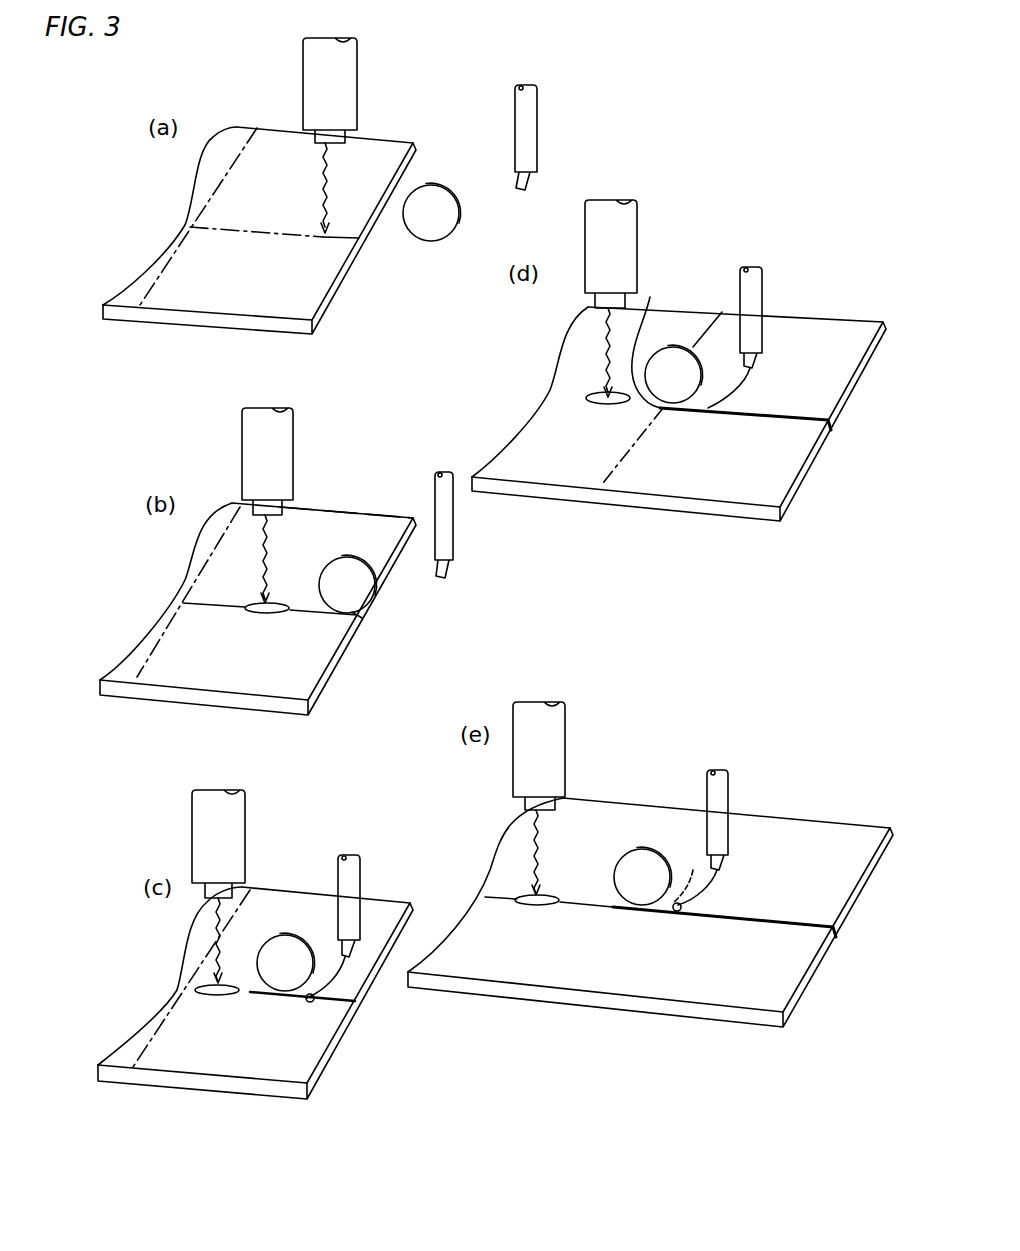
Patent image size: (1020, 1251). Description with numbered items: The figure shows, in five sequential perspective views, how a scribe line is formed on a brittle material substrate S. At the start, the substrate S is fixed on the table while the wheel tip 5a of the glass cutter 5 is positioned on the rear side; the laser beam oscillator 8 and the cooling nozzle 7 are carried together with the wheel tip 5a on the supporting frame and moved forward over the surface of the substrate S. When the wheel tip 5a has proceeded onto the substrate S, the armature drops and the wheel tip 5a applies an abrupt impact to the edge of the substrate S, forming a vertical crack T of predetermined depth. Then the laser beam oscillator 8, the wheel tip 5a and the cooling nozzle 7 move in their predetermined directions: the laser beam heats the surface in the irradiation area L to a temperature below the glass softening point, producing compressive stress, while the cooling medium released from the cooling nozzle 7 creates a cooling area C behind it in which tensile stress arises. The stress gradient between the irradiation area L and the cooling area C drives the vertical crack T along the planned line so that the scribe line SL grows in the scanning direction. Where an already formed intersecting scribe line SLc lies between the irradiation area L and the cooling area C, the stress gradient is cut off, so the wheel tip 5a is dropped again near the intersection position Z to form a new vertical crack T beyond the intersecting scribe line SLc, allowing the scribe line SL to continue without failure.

The laser beam oscillator 8 is at (308, 85).
The cooling nozzle 7 is at (533, 118).
The wheel tip 5a is at (447, 211).
The glass cutter 5 is at (351, 560).
The brittle material substrate S is at (310, 292).
The intersecting scribe line SLc is at (150, 286).
The scribe line SL is at (667, 410).
The irradiation area L is at (255, 607).
The vertical crack T is at (358, 618).
The cooling area C is at (310, 1002).
The intersection position Z is at (650, 297).